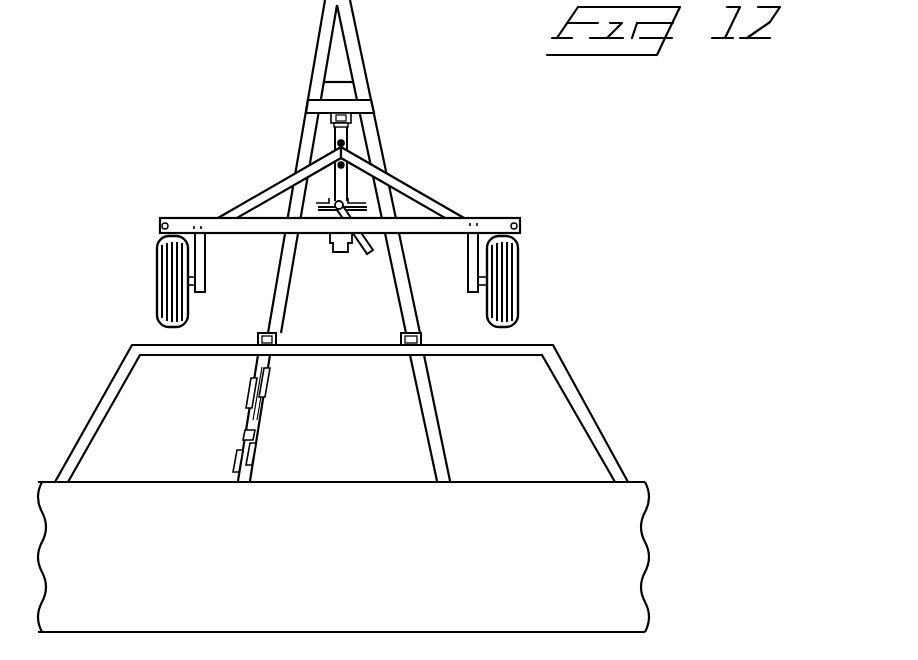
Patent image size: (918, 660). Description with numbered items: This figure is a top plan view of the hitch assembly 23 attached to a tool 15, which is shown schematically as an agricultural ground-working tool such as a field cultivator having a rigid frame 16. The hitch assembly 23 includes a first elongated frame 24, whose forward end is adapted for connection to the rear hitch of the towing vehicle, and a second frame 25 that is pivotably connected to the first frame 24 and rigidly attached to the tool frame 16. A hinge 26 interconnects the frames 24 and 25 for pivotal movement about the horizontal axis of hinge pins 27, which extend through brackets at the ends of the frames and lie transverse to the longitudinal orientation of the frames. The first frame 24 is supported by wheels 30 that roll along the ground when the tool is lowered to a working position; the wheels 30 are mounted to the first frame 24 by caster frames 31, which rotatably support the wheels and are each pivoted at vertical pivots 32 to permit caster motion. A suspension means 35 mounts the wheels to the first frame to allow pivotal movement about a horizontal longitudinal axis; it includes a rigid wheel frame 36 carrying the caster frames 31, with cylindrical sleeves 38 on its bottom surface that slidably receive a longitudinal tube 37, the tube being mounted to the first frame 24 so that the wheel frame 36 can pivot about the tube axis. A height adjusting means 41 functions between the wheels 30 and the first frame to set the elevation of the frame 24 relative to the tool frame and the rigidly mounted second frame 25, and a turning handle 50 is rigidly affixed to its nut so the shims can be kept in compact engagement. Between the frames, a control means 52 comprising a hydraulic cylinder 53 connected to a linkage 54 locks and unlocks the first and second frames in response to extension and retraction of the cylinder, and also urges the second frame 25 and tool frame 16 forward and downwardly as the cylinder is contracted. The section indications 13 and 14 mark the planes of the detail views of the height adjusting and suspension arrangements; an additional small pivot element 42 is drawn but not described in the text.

The section line 13- 13 is at (338, 57).
The section line 14- 14 is at (112, 166).
The tool 15 is at (651, 494).
The rigid frame 16 is at (628, 478).
The hitch assembly 23 is at (343, 166).
The first elongated frame 24 is at (293, 150).
The second frame 25 is at (423, 386).
The hinge 26 is at (394, 333).
The hinge pins 27 is at (258, 338).
The wheels 30 is at (166, 270).
The caster frames 31 is at (206, 263).
The pivots 32 is at (160, 227).
The suspension means 35 is at (441, 197).
The wheel frame 36 is at (262, 196).
The longitudinal tube 37 is at (347, 180).
The cylindrical sleeves 38 is at (344, 142).
The height adjusting means 41 is at (330, 215).
The pivot pin 42 is at (346, 202).
The turning handle 50 is at (397, 258).
The control means 52 is at (279, 418).
The hydraulic cylinder 53 is at (250, 450).
The linkage 54 is at (272, 380).